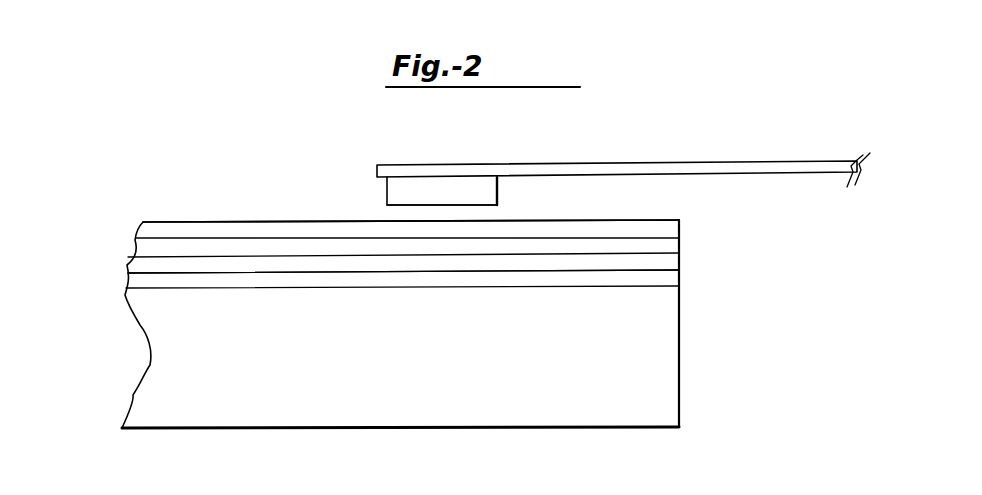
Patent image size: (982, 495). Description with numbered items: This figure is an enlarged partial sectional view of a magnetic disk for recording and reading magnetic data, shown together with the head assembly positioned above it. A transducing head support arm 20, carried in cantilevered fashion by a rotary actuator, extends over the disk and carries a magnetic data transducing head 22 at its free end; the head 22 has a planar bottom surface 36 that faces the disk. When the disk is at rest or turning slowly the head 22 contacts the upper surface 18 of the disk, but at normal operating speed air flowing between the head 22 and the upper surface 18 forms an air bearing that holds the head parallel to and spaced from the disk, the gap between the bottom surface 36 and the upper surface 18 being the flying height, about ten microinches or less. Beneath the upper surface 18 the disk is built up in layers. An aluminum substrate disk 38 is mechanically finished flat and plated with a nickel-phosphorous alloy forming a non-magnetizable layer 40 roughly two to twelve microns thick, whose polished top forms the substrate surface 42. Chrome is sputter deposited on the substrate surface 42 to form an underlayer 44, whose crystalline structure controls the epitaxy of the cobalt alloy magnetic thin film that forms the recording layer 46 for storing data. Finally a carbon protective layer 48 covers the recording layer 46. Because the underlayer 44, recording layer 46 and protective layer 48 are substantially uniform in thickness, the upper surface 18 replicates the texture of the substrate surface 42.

The upper surface 18 is at (245, 220).
The transducing head support arm 20 is at (787, 163).
The magnetic data transducing head 22 is at (382, 190).
The planar bottom surface 36 is at (477, 205).
The aluminum substrate disk 38 is at (668, 395).
The non-magnetizable layer 40 is at (592, 280).
The substrate surface 42 is at (660, 268).
The underlayer 44 is at (137, 268).
The recording layer 46 is at (665, 247).
The protective layer 48 is at (182, 232).